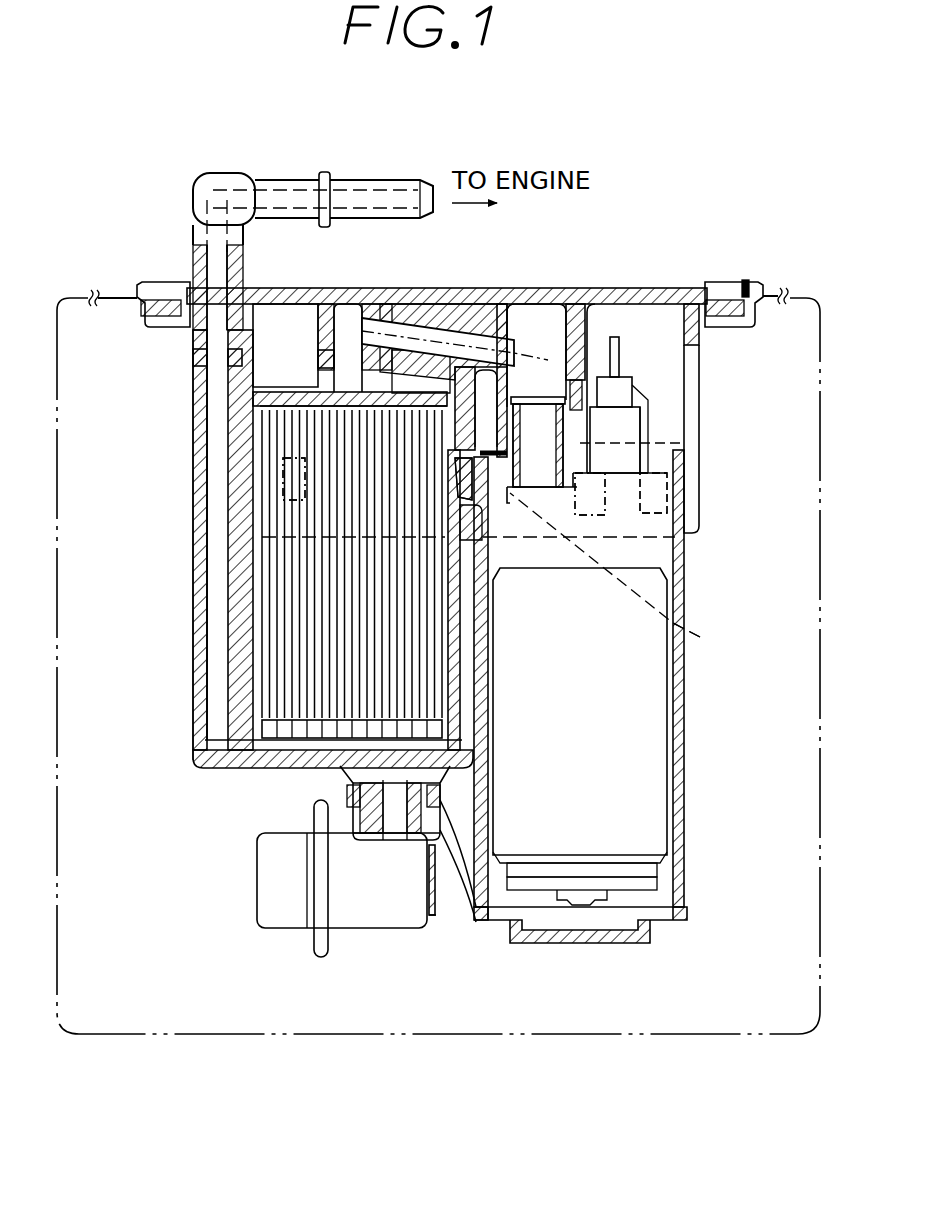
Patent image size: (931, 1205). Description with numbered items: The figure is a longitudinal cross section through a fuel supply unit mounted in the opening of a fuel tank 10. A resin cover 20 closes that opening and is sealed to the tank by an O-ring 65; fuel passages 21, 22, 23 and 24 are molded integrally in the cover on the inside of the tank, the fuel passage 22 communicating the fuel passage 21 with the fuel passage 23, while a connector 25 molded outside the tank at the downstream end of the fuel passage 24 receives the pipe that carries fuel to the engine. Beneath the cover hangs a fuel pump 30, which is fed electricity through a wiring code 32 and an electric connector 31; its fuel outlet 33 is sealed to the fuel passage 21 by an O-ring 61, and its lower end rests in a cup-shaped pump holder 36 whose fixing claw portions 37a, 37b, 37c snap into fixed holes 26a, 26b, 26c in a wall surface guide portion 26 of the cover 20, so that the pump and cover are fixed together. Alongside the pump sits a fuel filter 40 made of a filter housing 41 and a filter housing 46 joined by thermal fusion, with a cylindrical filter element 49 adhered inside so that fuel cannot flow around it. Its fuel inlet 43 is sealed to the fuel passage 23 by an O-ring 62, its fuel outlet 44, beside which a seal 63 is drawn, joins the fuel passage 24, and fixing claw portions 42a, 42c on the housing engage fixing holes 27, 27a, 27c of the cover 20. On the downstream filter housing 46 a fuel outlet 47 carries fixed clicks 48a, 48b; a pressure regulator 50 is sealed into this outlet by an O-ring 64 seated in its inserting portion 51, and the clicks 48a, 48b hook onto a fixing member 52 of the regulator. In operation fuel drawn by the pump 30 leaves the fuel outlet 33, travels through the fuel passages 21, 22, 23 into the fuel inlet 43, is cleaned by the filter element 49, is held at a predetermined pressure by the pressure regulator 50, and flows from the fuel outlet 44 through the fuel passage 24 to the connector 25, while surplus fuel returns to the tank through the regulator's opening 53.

The fuel tank 10 is at (773, 292).
The cover 20 is at (467, 285).
The fuel passage 21 is at (568, 395).
The fuel passage 22 is at (455, 340).
The fuel passage 23 is at (349, 338).
The fuel passage 24 is at (187, 293).
The connector 25 is at (368, 180).
The wall surface guide portion 26 is at (700, 426).
The fixed hole 26a is at (667, 491).
The fixed hole 26b is at (605, 499).
The fixed hole 26c is at (632, 575).
The filter case 27 is at (232, 565).
The fixing hole 27a is at (472, 493).
The fixing hole 27c is at (283, 482).
The fuel pump 30 is at (650, 767).
The electric connector 31 is at (648, 408).
The wiring code 32 is at (620, 352).
The fuel outlet 33 is at (530, 428).
The pump holder 36 is at (687, 827).
The fixing claw portion 37a is at (720, 498).
The fixing claw portion 37b is at (693, 543).
The fixing claw portion 37c is at (740, 655).
The fuel filter 40 is at (190, 553).
The filter housing 41 is at (193, 447).
The fixing claw portion 42a is at (490, 488).
The fixing claw portion 42c is at (196, 497).
The fuel inlet 43 is at (340, 395).
The fuel outlet 44 is at (191, 380).
The filter housing 46 is at (287, 770).
The fuel outlet 47 is at (350, 792).
The fixing claw portion 48a is at (445, 785).
The fixing claw portion 48b is at (350, 810).
The filter element 49 is at (272, 686).
The pressure regulator 50 is at (350, 920).
The inserting portion 51 is at (420, 847).
The fixing member 52 is at (480, 922).
The opening 53 is at (447, 892).
The O-ring 61 is at (542, 453).
The O-ring 62 is at (327, 357).
The seal ring 63 is at (193, 358).
The O-ring 64 is at (318, 806).
The O-ring 65 is at (712, 292).